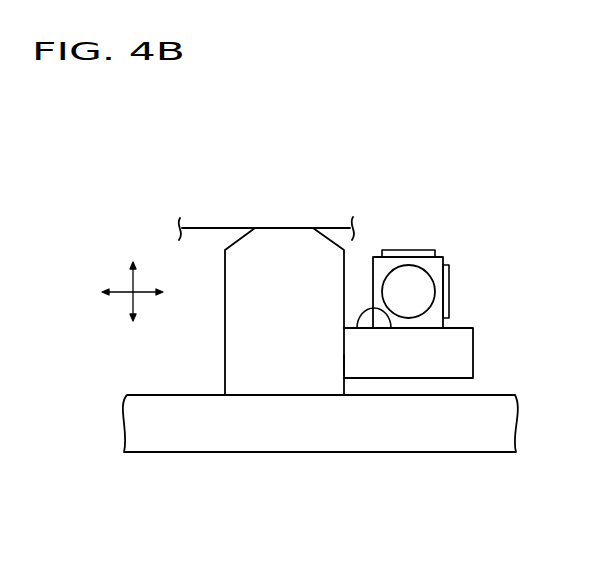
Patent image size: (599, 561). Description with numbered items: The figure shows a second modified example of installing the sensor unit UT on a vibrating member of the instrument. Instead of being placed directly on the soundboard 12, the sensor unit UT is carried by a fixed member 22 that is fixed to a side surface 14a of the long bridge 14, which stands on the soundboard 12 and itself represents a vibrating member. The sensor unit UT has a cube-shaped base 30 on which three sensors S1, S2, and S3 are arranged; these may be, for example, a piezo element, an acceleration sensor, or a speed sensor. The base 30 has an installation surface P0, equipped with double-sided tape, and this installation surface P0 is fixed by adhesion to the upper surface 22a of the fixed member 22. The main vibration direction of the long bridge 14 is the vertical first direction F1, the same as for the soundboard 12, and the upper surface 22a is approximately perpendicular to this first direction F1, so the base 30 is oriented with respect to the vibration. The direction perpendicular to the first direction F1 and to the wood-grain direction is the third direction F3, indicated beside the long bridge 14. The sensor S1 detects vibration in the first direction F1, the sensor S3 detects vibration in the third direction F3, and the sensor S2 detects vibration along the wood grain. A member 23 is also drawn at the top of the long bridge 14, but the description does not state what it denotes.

The soundboard 12 is at (272, 442).
The long bridge 14 is at (225, 318).
The side surface 14a is at (347, 360).
The fixed member 22 is at (465, 352).
The upper surface 22a is at (356, 312).
The plate 23 is at (220, 228).
The base 30 is at (390, 283).
The sensor S1 is at (410, 249).
The sensor S2 is at (376, 255).
The sensor S3 is at (452, 290).
The sensor unit UT is at (444, 253).
The installation surface P0 is at (409, 334).
The first direction F1 is at (132, 277).
The third direction F3 is at (115, 294).